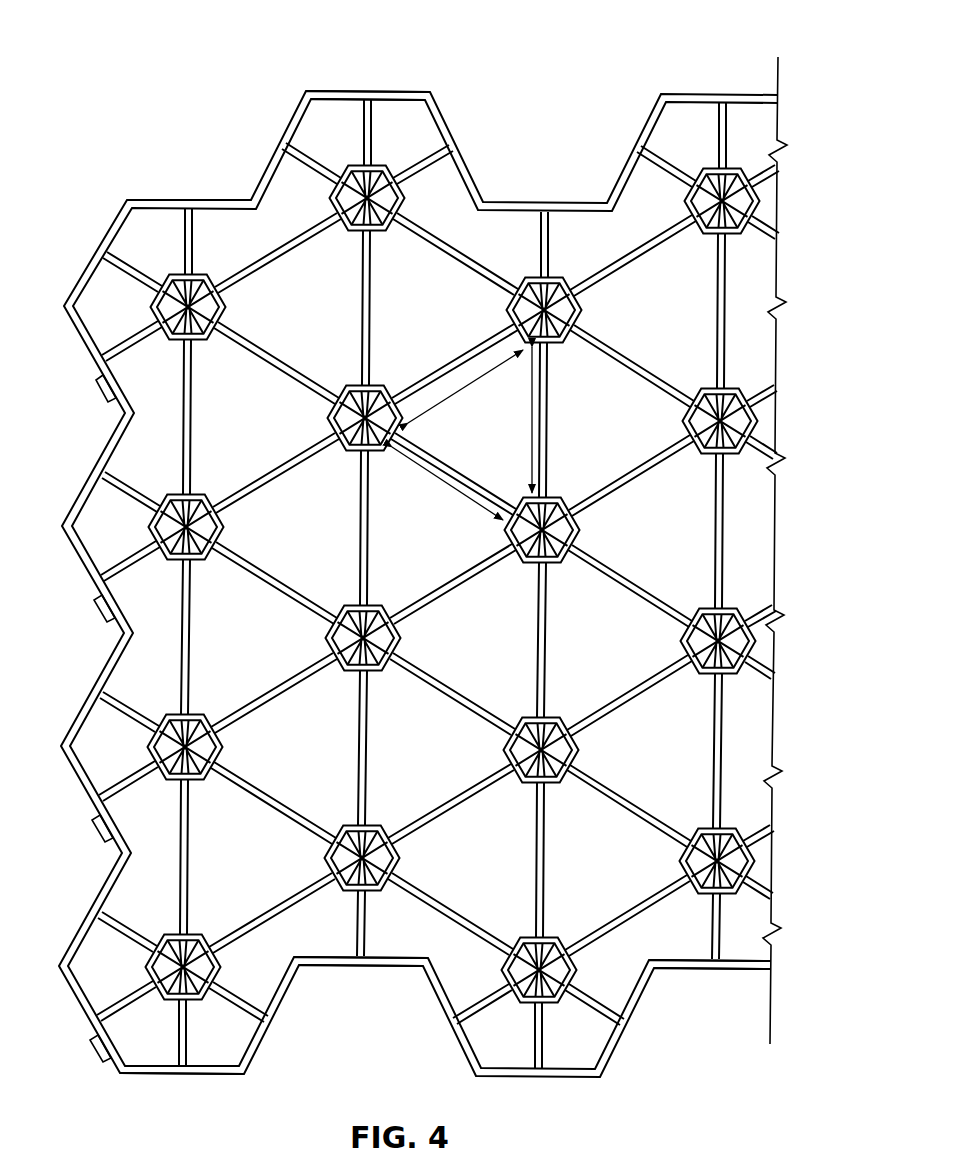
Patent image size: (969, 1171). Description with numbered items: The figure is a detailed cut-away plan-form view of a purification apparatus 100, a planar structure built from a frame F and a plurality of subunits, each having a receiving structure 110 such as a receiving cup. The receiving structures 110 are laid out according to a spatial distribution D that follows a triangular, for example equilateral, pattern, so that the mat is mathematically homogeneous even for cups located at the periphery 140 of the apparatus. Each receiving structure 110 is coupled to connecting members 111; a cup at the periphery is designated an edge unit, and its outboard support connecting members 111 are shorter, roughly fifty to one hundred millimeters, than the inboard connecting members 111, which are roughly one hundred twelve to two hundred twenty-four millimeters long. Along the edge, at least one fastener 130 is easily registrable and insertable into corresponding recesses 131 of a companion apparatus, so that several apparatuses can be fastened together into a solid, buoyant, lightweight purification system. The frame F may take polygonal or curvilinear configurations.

The purification apparatus 100 is at (582, 92).
The receiving structure 110 is at (150, 312).
The connecting member 111 is at (268, 258).
The fastener 130 is at (100, 398).
The recess 131 is at (332, 967).
The periphery 140 is at (345, 91).
The frame F is at (74, 727).
The spatial distribution D is at (463, 433).